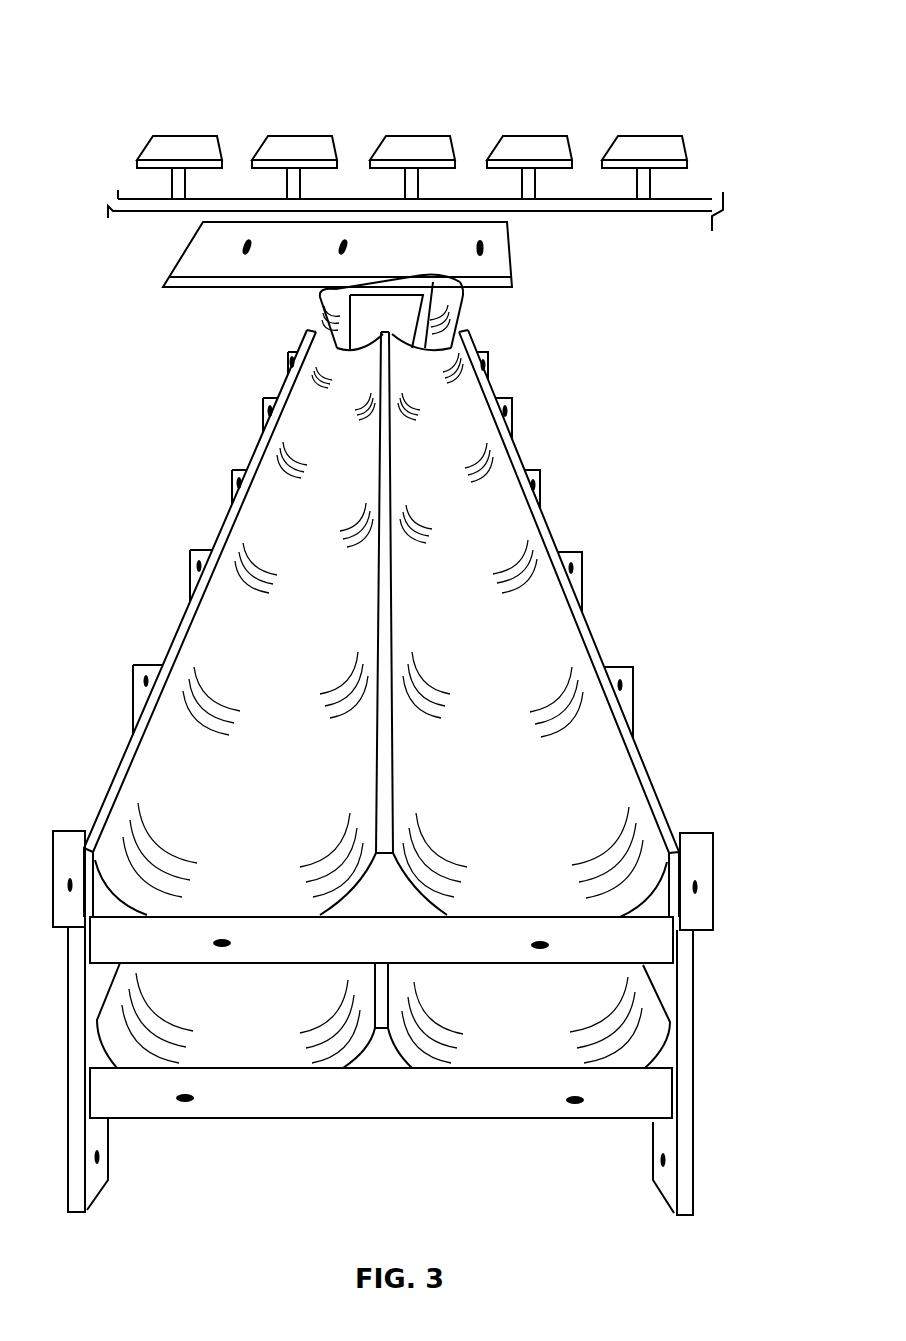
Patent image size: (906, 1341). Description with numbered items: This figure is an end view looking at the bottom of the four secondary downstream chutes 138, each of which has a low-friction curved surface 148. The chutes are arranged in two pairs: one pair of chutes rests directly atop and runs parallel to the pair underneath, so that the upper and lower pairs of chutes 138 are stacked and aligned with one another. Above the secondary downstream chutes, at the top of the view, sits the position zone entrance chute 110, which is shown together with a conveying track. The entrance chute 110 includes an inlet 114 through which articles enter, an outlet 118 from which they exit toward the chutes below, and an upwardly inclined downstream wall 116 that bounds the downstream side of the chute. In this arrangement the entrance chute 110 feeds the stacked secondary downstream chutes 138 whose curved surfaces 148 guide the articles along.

The position zone entrance chute 110 is at (375, 315).
The inlet 114 is at (400, 283).
The upwardly inclined downstream wall 116 is at (452, 280).
The outlet 118 is at (337, 348).
The secondary downstream chute 138 is at (388, 583).
The low-friction curved surface 148 is at (500, 658).